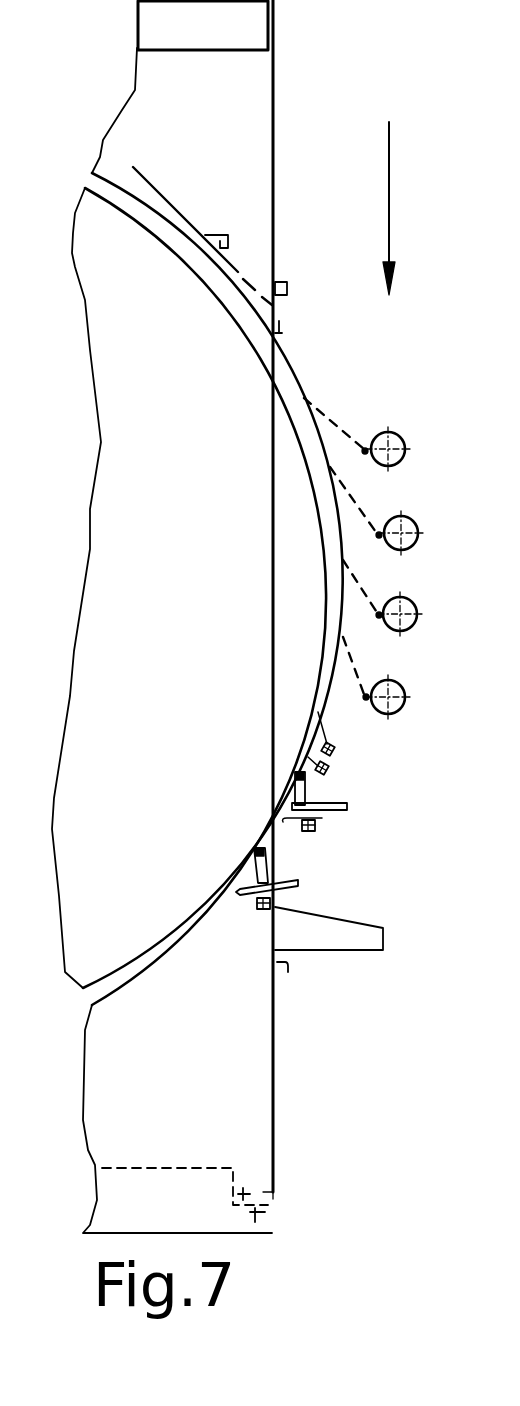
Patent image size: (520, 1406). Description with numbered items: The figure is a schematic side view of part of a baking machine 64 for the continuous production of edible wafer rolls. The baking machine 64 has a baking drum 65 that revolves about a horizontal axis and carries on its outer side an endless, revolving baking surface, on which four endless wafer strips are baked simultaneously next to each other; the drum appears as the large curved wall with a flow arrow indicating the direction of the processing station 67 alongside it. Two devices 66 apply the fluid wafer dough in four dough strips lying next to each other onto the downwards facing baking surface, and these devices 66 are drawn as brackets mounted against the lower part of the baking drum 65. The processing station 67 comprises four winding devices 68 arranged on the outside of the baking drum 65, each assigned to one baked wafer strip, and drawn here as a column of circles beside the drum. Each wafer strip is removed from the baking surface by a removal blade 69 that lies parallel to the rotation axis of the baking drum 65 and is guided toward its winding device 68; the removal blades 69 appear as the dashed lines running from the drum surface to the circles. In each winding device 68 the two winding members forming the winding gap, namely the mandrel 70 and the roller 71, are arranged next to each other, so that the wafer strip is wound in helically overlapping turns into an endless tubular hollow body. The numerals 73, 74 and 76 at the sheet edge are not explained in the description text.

The baking machine 64 is at (137, 22).
The baking drum 65 is at (110, 197).
The device for applying fluid wafer dough 66 is at (322, 790).
The processing station 67 is at (389, 184).
The winding device 68 is at (405, 432).
The removal blade 69 is at (304, 398).
The mandrel 70 is at (362, 447).
The roller 71 is at (405, 446).
The reference element 73 is at (505, 216).
The reference element 74 is at (506, 304).
The reference element 76 is at (507, 834).